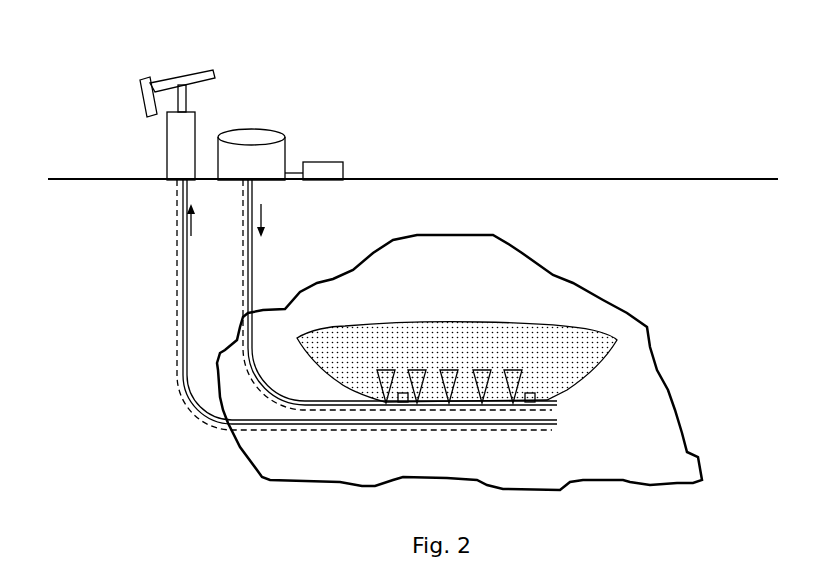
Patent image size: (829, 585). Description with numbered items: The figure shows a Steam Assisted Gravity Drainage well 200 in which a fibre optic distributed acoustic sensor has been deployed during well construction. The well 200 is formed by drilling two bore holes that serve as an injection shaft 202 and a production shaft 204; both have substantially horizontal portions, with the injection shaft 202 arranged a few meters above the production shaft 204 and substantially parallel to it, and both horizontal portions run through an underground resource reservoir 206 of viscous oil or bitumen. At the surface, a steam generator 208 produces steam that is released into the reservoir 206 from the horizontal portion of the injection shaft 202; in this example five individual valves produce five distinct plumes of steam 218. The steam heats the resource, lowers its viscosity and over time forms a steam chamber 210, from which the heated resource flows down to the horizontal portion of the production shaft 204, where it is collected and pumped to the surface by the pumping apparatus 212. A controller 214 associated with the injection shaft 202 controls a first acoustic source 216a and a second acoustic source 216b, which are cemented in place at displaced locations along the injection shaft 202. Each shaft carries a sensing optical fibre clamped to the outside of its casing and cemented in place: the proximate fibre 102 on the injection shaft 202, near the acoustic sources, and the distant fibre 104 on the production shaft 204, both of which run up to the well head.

The Steam Assisted Gravity Drainage well 200 is at (551, 65).
The pumping apparatus 212 is at (141, 83).
The production shaft 204 is at (188, 198).
The steam generator 208 is at (236, 173).
The controller 214 is at (332, 161).
The injection shaft 202 is at (251, 278).
The distant fibre 104 is at (177, 263).
The proximate fibre 102 is at (245, 277).
The underground resource reservoir 206 is at (451, 271).
The steam chamber 210 is at (537, 365).
The plumes of steam 218 is at (386, 370).
The first acoustic source 216a is at (398, 403).
The second acoustic source 216b is at (538, 403).